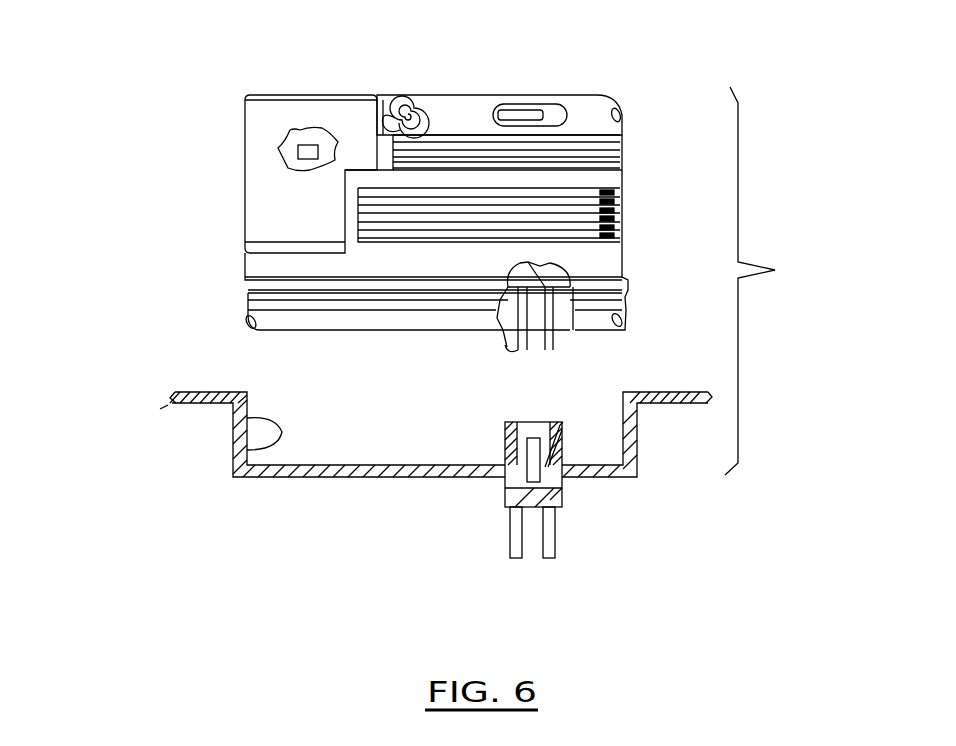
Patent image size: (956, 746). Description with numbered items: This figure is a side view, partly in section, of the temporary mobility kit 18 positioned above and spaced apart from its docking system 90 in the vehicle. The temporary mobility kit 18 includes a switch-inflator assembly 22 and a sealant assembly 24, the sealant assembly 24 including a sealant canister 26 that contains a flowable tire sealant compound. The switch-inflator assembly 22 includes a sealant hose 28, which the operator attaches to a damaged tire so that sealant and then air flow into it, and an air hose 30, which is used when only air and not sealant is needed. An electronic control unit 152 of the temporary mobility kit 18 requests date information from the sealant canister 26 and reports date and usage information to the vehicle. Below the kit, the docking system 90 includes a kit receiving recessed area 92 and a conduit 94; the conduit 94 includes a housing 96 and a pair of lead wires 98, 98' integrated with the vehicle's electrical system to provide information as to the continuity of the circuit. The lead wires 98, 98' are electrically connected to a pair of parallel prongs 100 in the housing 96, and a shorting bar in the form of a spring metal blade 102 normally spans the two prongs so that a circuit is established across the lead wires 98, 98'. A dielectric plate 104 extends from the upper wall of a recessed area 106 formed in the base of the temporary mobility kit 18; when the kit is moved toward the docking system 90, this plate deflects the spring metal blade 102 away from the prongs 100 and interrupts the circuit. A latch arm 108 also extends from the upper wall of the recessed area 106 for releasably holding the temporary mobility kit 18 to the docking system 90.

The temporary mobility kit 18 is at (473, 98).
The switch-inflator assembly 22 is at (612, 108).
The sealant assembly 24 is at (300, 113).
The sealant canister 26 is at (260, 168).
The sealant hose 28 is at (248, 282).
The air hose 30 is at (248, 300).
The docking system 90 is at (327, 473).
The kit receiving recessed area 92 is at (262, 448).
The conduit 94 is at (638, 513).
The housing 96 is at (507, 480).
The lead wire 98 is at (470, 554).
The lead wire 98' is at (580, 540).
The parallel prong 100 is at (523, 450).
The spring metal blade 102 is at (562, 448).
The dielectric plate 104 is at (547, 340).
The recessed area 106 is at (503, 343).
The latch arm 108 is at (517, 350).
The electronic control unit 152 is at (547, 103).